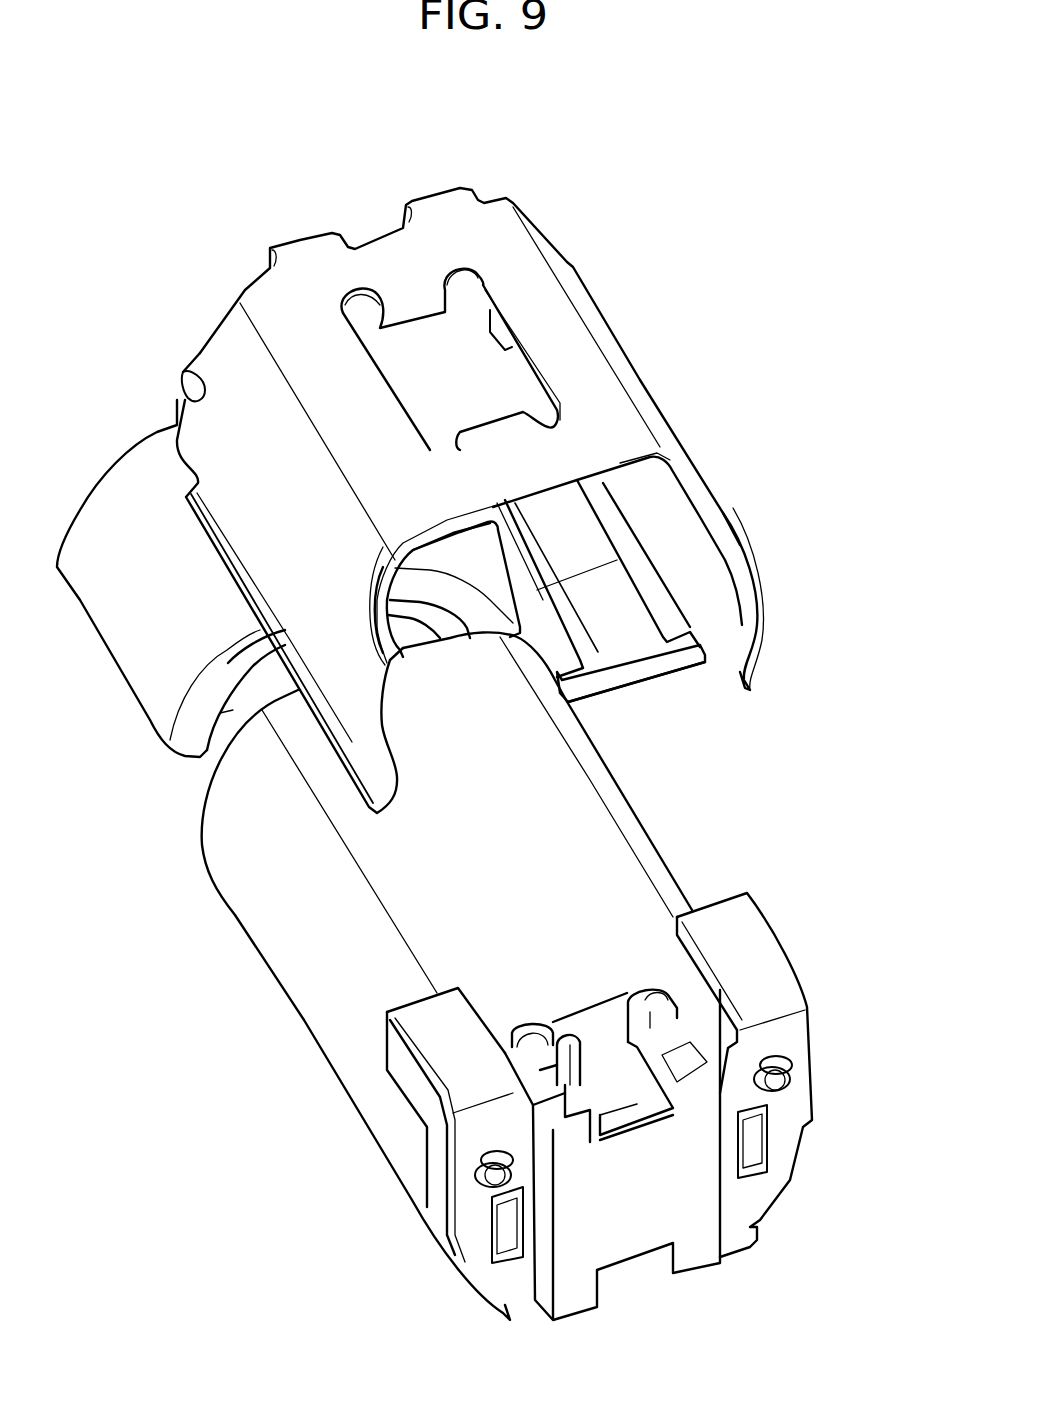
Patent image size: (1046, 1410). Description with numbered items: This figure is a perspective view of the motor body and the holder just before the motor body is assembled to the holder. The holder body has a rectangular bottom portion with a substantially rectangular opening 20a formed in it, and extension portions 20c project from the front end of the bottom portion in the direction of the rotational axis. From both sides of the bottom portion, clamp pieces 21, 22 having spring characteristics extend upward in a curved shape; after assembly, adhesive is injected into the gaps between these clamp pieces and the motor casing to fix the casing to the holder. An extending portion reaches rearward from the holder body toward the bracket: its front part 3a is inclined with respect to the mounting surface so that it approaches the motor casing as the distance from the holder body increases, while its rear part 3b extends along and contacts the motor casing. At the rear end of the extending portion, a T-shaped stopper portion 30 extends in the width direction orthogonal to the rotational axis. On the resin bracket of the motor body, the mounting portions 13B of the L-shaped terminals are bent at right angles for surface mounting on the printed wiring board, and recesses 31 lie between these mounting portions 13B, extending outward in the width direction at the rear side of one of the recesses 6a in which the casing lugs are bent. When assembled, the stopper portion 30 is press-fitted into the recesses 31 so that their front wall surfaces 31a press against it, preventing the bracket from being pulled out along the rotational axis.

The extension portion 20c is at (297, 237).
The clamp piece 21 is at (230, 377).
The opening 20a is at (480, 380).
The front part 3a is at (605, 528).
The rear part 3b is at (640, 600).
The clamp piece 22 is at (717, 500).
The stopper portion 30 is at (633, 663).
The mounting portion 13B is at (458, 1023).
The recess 31 is at (578, 1087).
The front wall surface 31a is at (560, 1075).
The recess 6a is at (633, 1103).